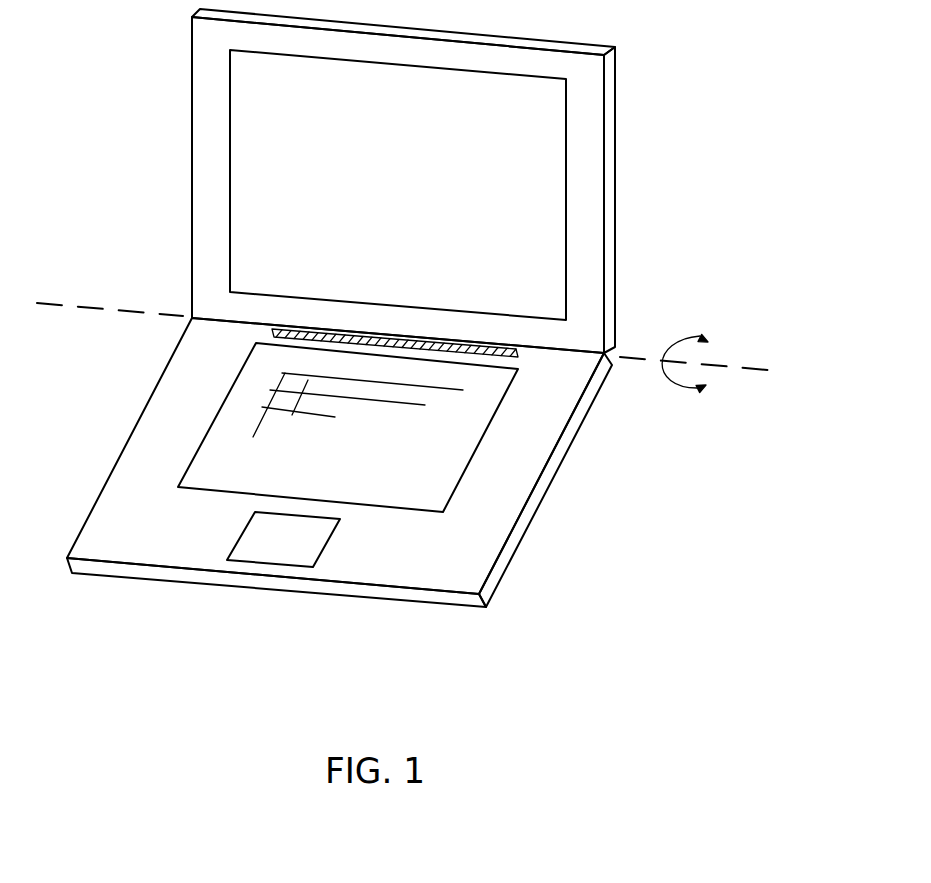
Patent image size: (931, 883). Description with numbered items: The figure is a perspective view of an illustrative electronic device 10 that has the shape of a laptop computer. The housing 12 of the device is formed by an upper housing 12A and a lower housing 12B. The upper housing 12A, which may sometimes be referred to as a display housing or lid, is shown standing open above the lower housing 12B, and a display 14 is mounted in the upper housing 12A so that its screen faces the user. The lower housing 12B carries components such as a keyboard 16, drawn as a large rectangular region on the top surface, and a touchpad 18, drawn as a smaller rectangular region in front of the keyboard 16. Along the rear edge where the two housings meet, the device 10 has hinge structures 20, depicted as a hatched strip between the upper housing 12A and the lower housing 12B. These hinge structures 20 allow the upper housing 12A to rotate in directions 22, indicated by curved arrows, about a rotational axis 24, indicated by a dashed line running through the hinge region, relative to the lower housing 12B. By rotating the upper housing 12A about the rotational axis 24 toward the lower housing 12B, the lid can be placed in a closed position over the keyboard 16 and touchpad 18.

The electronic device 10 is at (406, 329).
The housing 12 is at (406, 329).
The upper housing 12A is at (392, 181).
The lower housing 12B is at (325, 484).
The display 14 is at (532, 175).
The keyboard 16 is at (480, 443).
The touchpad 18 is at (294, 581).
The hinge structures 20 is at (492, 343).
The directions 22 is at (690, 389).
The rotational axis 24 is at (80, 305).